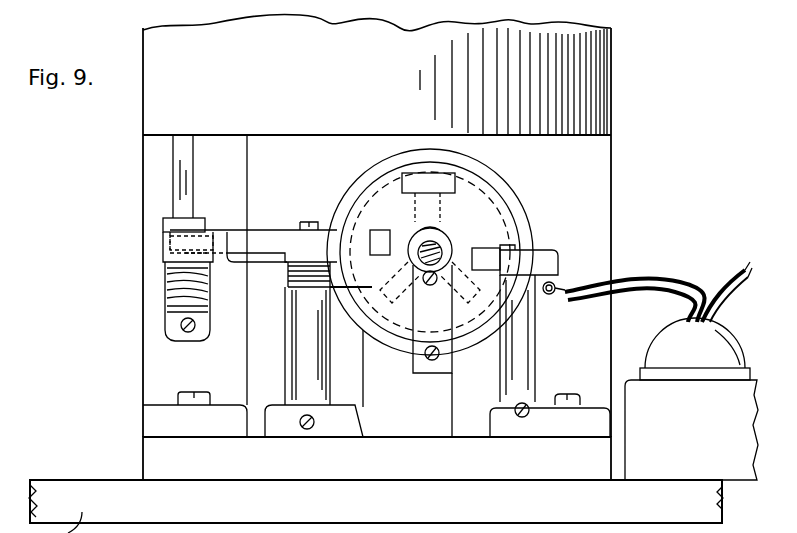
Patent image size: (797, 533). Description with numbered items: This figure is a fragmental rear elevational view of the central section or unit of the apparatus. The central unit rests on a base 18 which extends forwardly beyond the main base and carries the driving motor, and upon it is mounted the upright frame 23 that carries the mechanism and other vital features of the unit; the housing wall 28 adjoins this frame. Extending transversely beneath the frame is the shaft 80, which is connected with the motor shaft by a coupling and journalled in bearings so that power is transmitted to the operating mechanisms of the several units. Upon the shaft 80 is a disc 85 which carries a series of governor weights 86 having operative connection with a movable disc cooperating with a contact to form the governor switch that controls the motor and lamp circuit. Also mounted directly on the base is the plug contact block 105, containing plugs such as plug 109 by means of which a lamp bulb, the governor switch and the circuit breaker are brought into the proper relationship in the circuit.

The base 18 is at (160, 452).
The upright frame 23 is at (148, 167).
The housing wall 28 is at (612, 78).
The shaft 80 is at (447, 247).
The disc 85 is at (517, 215).
The governor weights 86 is at (372, 185).
The plug contact block 105 is at (705, 458).
The plug 109 is at (677, 360).